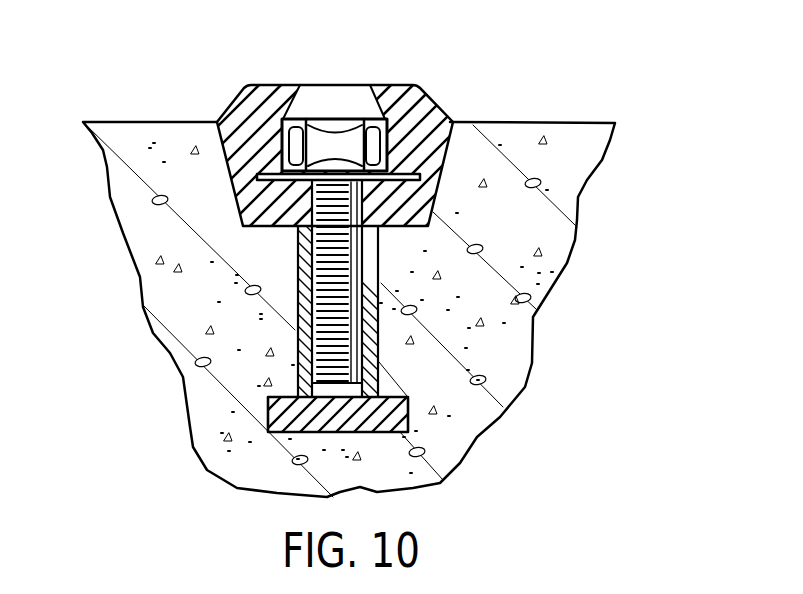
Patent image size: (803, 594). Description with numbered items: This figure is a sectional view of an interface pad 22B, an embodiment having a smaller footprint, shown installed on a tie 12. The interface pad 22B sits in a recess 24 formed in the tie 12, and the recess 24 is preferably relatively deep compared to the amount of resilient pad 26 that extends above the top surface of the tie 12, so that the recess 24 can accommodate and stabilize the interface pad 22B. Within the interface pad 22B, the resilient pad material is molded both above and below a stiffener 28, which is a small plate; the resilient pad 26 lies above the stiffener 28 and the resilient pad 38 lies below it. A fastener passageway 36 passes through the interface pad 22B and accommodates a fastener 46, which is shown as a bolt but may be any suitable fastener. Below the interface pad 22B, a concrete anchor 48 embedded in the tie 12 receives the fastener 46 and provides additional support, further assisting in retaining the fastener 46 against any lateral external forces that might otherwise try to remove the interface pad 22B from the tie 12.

The tie 12 is at (550, 142).
The interface pad 22B is at (349, 249).
The recess 24 is at (437, 193).
The resilient pad 26 is at (436, 106).
The stiffener 28 is at (418, 174).
The fastener passageway 36 is at (350, 100).
The resilient pad 38 is at (255, 214).
The fastener 46 is at (332, 137).
The concrete anchor 48 is at (410, 422).